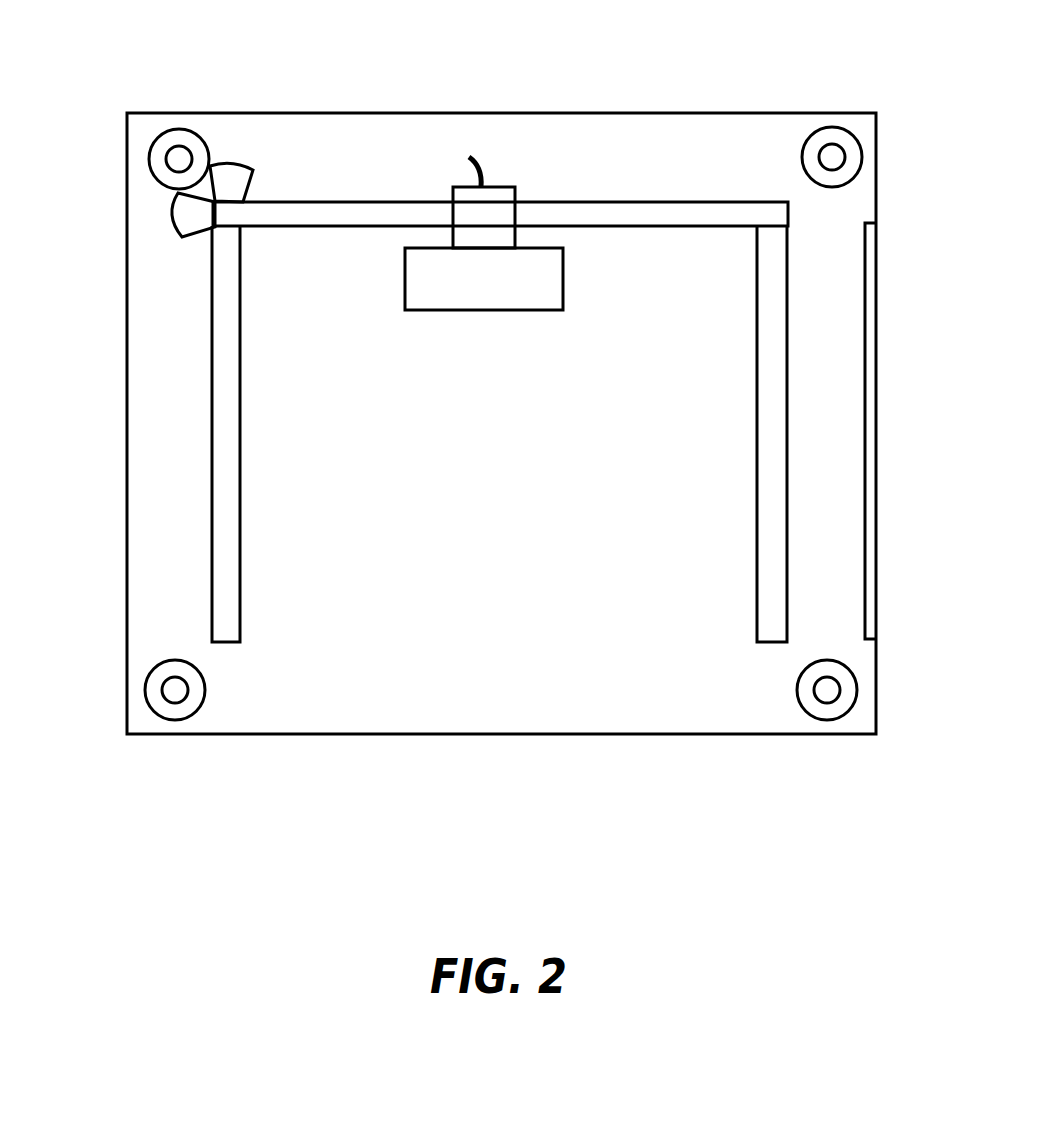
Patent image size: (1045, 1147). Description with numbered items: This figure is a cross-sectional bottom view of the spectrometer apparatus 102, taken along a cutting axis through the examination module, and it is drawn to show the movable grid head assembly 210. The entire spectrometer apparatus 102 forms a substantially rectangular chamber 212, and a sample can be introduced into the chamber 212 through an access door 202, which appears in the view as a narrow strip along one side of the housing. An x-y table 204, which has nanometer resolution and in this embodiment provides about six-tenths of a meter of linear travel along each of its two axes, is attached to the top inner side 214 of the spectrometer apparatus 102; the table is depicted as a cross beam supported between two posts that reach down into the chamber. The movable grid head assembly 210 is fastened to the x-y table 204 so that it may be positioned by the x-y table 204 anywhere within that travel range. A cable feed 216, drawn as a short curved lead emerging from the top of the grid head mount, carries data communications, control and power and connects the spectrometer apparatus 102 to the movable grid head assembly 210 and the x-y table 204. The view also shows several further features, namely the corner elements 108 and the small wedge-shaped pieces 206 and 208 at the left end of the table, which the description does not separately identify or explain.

The spectrometer apparatus 102 is at (515, 720).
The mounting hole 108 is at (833, 128).
The access door 202 is at (873, 342).
The x-y table 204 is at (767, 222).
The lower clamp wedge 206 is at (172, 215).
The upper clamp wedge 208 is at (229, 163).
The movable grid head assembly 210 is at (563, 283).
The rectangular chamber 212 is at (262, 553).
The top inner side 214 is at (385, 132).
The cable feed 216 is at (483, 162).